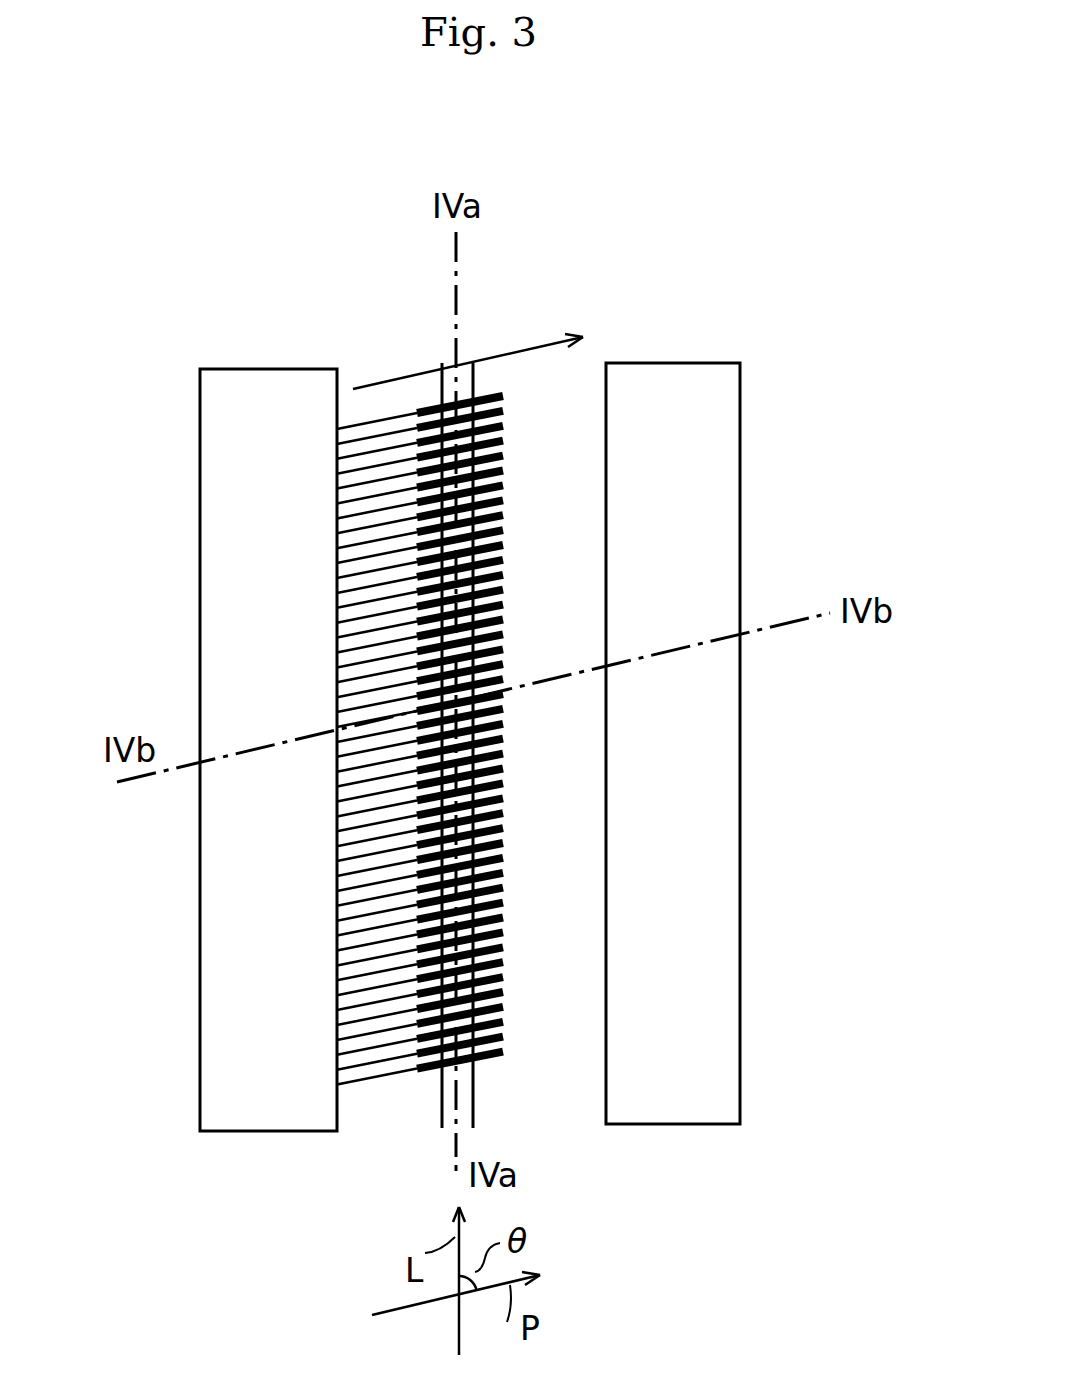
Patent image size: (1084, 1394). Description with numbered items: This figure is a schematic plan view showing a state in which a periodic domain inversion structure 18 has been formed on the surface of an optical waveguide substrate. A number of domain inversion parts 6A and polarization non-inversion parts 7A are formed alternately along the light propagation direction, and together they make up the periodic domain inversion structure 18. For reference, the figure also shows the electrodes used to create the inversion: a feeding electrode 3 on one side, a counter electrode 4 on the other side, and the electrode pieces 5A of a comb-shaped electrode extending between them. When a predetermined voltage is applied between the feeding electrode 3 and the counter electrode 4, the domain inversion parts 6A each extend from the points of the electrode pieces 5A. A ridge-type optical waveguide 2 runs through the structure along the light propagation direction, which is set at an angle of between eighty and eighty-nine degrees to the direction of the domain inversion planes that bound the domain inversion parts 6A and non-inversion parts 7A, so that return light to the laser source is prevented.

The feeding electrode 3 is at (268, 369).
The counter electrode 4 is at (725, 363).
The optical waveguide 2 is at (473, 382).
The electrode pieces 5A is at (378, 420).
The periodic domain inversion structure 18 is at (511, 745).
The polarization non-inversion parts 7A is at (505, 905).
The domain inversion parts 6A is at (503, 1023).